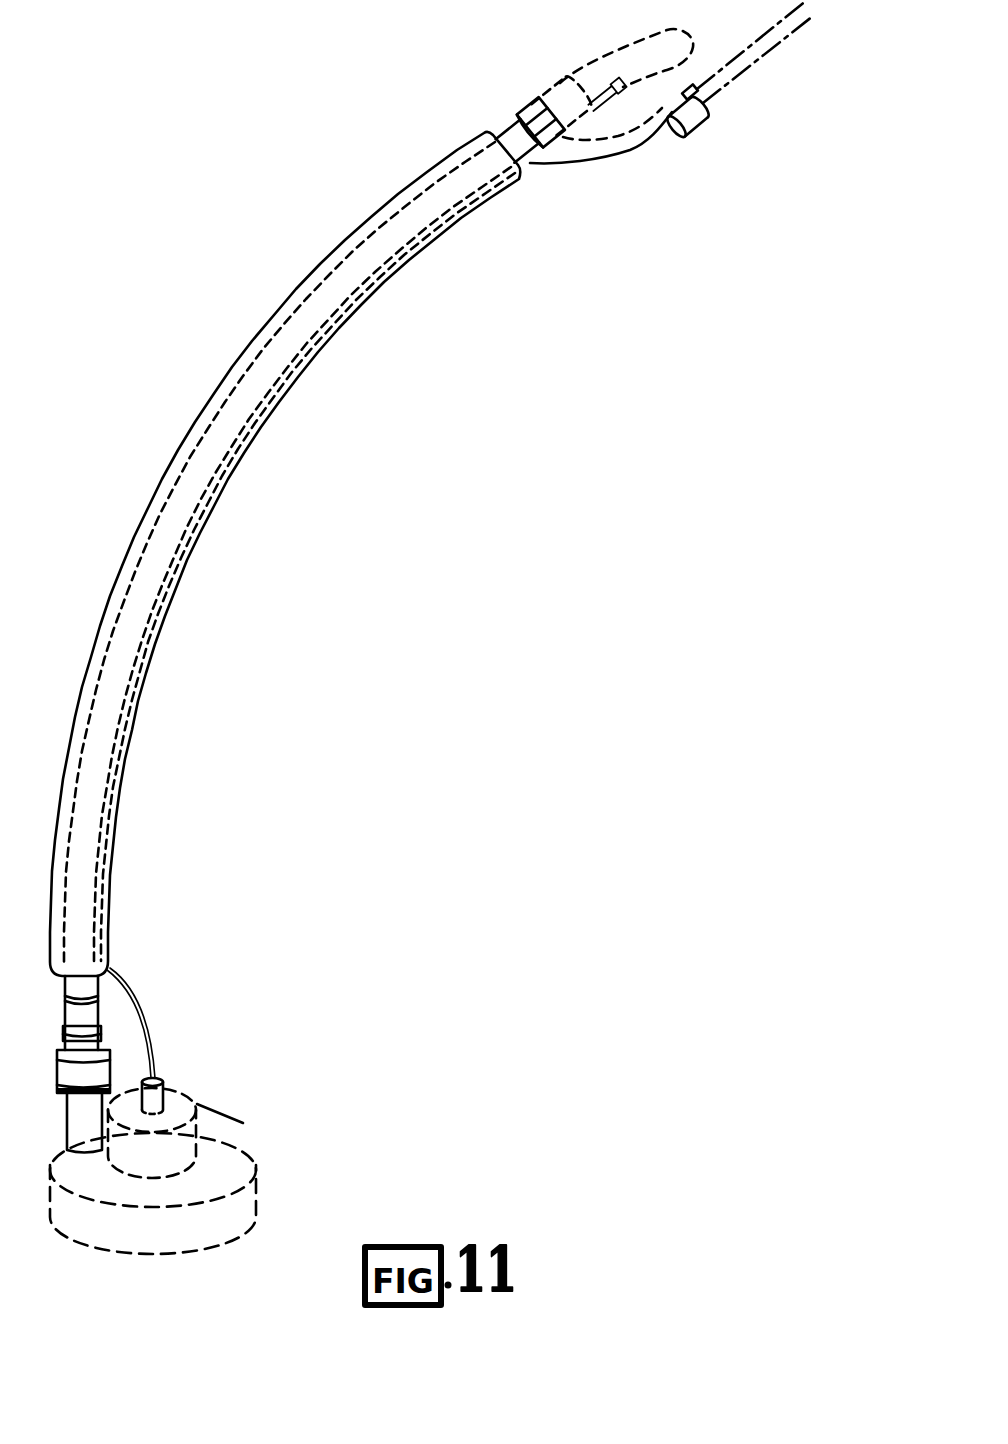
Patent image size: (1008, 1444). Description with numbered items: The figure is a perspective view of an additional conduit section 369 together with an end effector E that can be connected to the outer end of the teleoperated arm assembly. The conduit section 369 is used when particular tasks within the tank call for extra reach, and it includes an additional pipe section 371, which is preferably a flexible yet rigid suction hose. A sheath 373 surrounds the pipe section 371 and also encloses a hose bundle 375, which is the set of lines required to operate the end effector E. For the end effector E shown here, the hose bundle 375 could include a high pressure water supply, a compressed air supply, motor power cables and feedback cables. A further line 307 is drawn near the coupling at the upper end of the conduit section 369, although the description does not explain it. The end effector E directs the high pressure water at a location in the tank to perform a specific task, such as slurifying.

The fluid line / hose 307 is at (590, 87).
The additional conduit section 369 is at (172, 767).
The additional pipe section 371 is at (514, 130).
The sheath 373 is at (232, 430).
The hose bundle 375 is at (631, 152).
The end effector E is at (212, 1153).